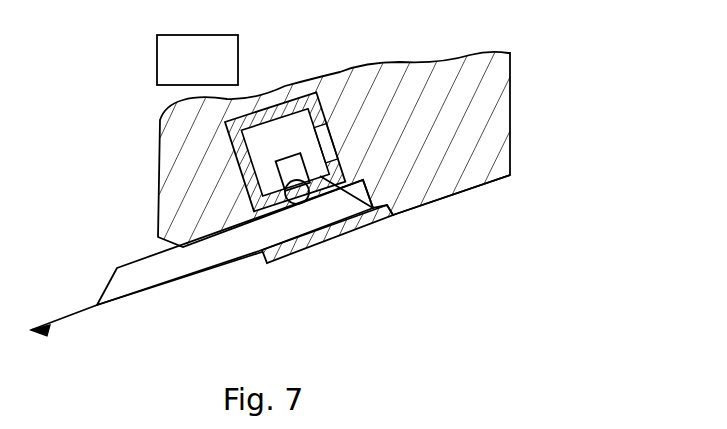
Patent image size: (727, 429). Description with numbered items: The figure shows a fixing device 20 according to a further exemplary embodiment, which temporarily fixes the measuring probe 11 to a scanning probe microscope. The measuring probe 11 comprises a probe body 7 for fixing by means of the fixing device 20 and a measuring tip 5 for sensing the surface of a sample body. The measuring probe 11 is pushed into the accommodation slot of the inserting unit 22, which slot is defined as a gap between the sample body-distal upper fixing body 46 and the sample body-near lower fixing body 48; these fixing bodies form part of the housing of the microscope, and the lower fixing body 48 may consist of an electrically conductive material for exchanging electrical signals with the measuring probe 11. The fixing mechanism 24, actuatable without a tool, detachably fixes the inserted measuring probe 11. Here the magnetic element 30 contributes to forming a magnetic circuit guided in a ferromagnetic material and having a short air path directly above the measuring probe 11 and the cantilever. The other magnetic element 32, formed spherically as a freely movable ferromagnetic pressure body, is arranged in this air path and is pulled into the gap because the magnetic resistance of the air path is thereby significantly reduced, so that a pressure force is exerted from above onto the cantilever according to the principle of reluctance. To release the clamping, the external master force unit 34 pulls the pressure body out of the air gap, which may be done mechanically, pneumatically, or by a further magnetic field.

The measuring tip 5 is at (47, 333).
The probe body 7 is at (123, 283).
The measuring probe 11 is at (86, 266).
The fixing device 20 is at (529, 88).
The inserting unit 22 is at (203, 218).
The fixing mechanism 24 is at (293, 100).
The magnetic element 30 is at (342, 131).
The magnetic element 32 is at (297, 190).
The master force unit 34 is at (157, 65).
The upper fixing body 46 is at (470, 178).
The lower fixing body 48 is at (327, 232).